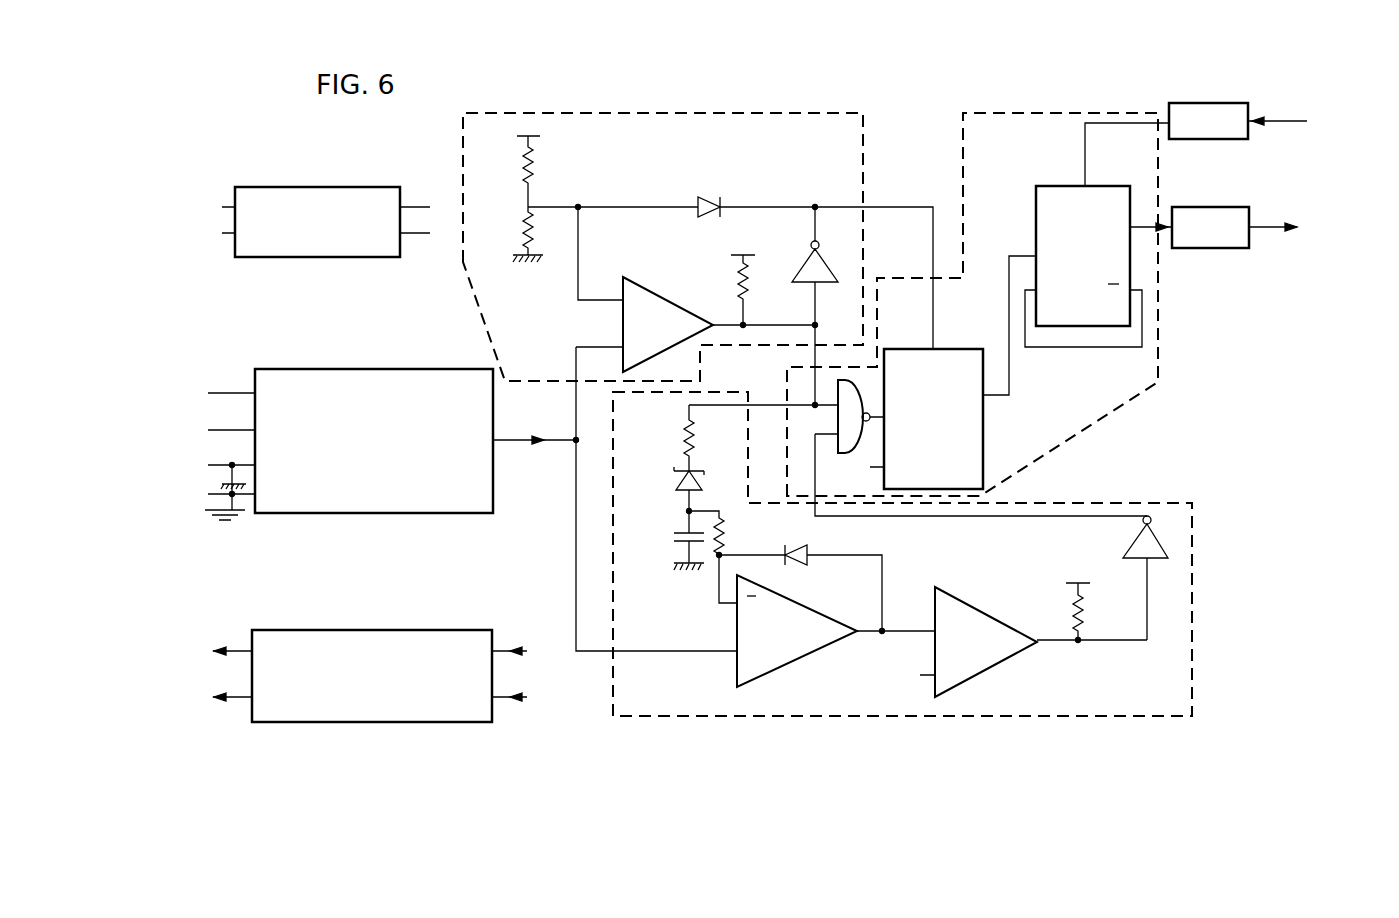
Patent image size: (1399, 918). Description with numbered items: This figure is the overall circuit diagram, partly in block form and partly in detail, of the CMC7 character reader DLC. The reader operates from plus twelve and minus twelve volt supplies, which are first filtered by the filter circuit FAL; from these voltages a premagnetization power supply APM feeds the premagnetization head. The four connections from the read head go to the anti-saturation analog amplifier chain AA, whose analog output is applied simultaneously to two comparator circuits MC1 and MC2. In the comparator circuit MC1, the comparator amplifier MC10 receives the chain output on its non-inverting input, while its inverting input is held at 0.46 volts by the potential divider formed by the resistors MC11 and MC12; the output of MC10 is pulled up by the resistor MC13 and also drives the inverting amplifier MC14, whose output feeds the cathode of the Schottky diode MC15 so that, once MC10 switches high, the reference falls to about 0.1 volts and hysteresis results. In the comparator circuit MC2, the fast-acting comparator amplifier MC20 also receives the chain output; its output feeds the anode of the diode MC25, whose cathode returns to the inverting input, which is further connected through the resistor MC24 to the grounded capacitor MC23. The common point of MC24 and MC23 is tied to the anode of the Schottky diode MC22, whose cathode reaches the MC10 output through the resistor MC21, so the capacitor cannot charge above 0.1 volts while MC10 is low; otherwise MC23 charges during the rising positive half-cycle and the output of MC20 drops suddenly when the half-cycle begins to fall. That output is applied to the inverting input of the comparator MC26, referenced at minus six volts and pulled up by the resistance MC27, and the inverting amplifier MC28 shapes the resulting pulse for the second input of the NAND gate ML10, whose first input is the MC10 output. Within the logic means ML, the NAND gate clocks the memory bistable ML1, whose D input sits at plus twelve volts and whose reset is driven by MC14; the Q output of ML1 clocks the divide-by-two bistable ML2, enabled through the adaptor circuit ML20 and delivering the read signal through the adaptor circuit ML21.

The character reader DLC is at (288, 174).
The filter circuit FAL is at (330, 187).
The anti-saturation analog amplifier chain AA is at (353, 369).
The premagnetization power supply APM is at (343, 630).
The comparator circuit MC1 is at (865, 134).
The comparator amplifier MC10 is at (684, 302).
The resistor MC11 is at (531, 166).
The resistor MC12 is at (526, 230).
The resistor MC13 is at (739, 286).
The inverting amplifier MC14 is at (805, 268).
The diode MC15 is at (714, 190).
The comparator circuit MC2 is at (1145, 503).
The fast-acting comparator amplifier MC20 is at (800, 668).
The resistor MC21 is at (683, 434).
The Schottky diode MC22 is at (674, 484).
The capacitor MC23 is at (680, 530).
The resistor MC24 is at (733, 540).
The diode MC25 is at (808, 552).
The comparator MC26 is at (996, 584).
The resistance MC27 is at (1088, 603).
The inverting amplifier MC28 is at (1128, 540).
The logic means ML is at (1161, 380).
The bistable ML1 is at (988, 326).
The bistable ML2 is at (1036, 232).
The NAND gate ML10 is at (835, 393).
The adaptor circuit ML20 is at (1240, 103).
The adaptor circuit ML21 is at (1236, 207).